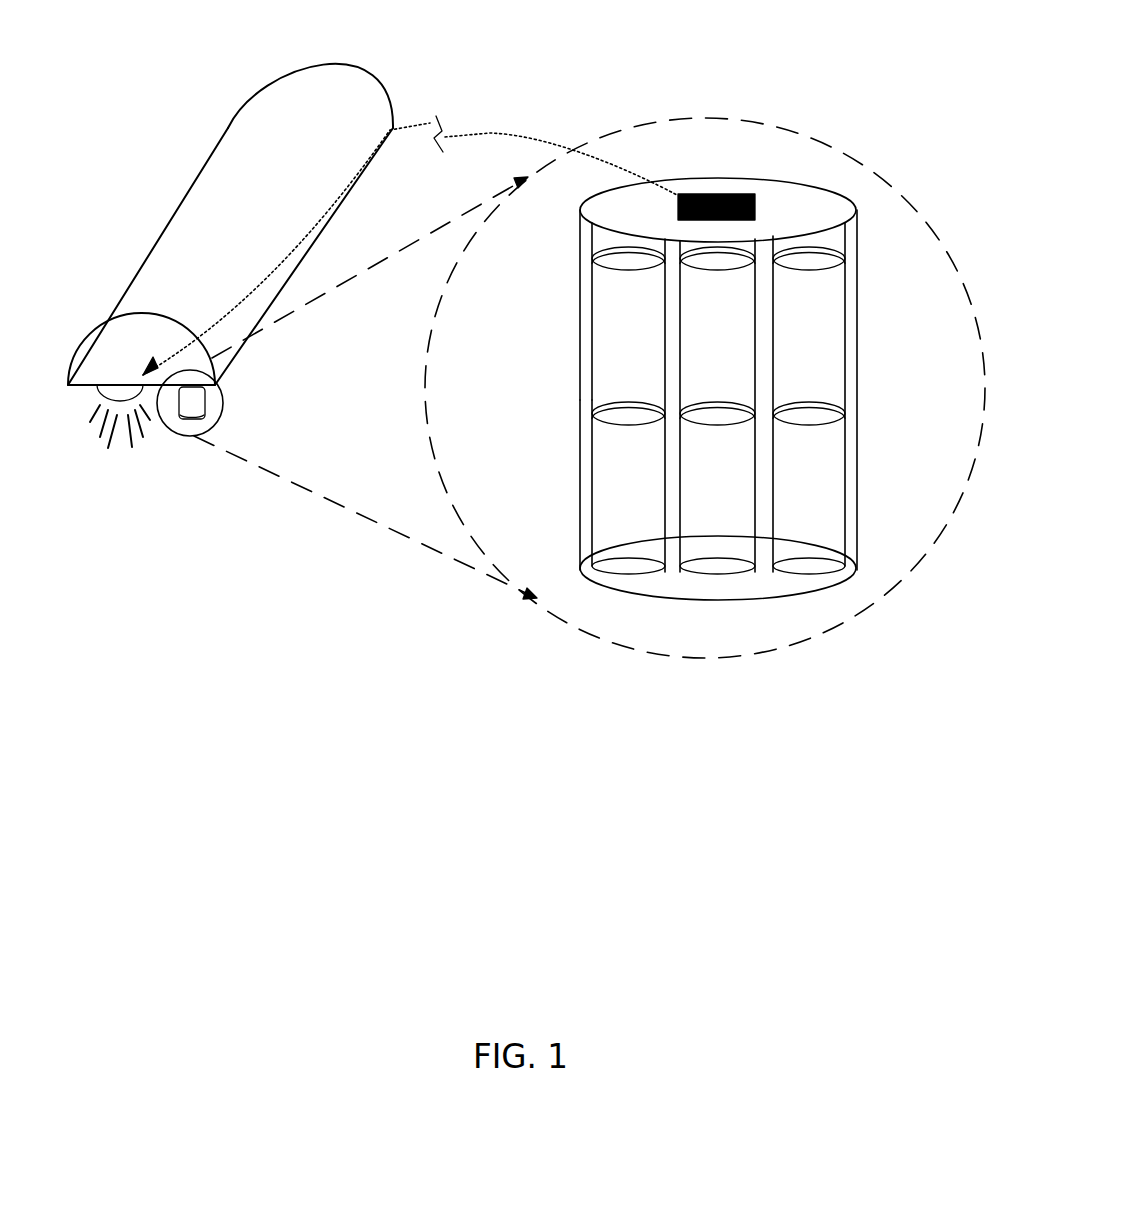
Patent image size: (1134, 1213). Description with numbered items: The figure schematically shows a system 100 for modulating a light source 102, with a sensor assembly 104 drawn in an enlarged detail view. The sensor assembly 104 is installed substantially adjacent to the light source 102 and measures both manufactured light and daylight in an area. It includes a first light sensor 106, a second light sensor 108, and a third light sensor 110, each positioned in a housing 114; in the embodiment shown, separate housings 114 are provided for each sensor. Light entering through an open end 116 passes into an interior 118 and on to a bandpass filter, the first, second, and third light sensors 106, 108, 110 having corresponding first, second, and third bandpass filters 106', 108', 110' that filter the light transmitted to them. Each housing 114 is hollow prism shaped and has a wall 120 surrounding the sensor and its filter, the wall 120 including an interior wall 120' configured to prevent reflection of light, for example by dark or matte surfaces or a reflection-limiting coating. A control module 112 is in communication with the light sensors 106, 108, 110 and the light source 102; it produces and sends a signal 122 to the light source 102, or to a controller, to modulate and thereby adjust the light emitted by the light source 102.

The system 100 is at (690, 100).
The light source 102 is at (118, 395).
The sensor assembly 104 is at (800, 133).
The first light sensor 106 is at (577, 273).
The first bandpass filter 106' is at (583, 432).
The second light sensor 108 is at (717, 305).
The second bandpass filter 108' is at (717, 457).
The third light sensor 110 is at (858, 279).
The third bandpass filter 110' is at (855, 434).
The control module 112 is at (745, 193).
The housing 114 is at (776, 573).
The open end 116 is at (583, 572).
The interior 118 is at (647, 361).
The wall 120 is at (536, 305).
The interior wall 120' is at (614, 485).
The signal 122 is at (473, 137).